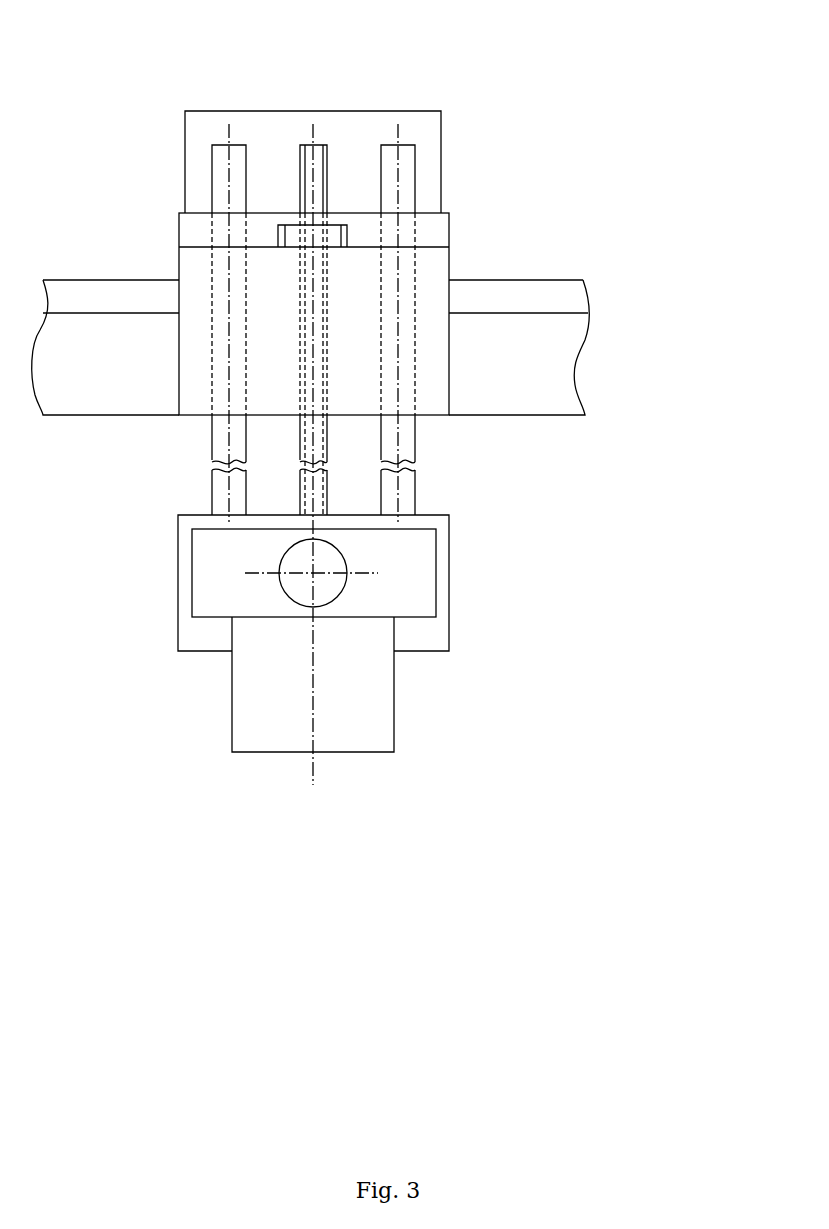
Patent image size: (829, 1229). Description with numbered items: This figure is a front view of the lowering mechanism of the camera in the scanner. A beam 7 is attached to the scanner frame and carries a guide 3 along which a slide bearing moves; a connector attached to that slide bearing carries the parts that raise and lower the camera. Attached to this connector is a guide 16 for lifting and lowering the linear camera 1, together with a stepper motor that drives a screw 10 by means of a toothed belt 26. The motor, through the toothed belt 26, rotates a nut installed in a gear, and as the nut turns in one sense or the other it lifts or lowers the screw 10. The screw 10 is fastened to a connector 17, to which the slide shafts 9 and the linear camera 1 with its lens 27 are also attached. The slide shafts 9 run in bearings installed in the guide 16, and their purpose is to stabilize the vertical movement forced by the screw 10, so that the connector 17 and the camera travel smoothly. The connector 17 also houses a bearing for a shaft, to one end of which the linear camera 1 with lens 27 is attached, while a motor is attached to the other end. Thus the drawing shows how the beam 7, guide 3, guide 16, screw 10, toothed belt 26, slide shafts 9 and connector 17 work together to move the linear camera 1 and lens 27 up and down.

The linear camera 1 is at (388, 527).
The guide 3 is at (389, 230).
The beam 7 is at (383, 322).
The slide shafts 9 is at (330, 272).
The screw 10 is at (411, 396).
The guide 16 is at (406, 263).
The connector 17 is at (407, 566).
The toothed belt 26 is at (258, 123).
The lens 27 is at (401, 667).